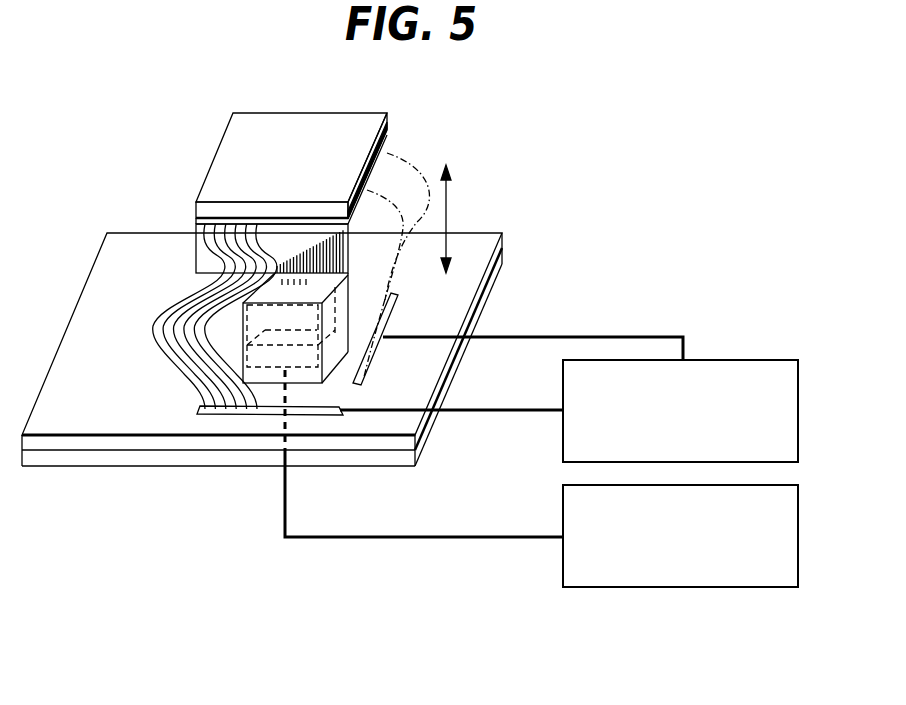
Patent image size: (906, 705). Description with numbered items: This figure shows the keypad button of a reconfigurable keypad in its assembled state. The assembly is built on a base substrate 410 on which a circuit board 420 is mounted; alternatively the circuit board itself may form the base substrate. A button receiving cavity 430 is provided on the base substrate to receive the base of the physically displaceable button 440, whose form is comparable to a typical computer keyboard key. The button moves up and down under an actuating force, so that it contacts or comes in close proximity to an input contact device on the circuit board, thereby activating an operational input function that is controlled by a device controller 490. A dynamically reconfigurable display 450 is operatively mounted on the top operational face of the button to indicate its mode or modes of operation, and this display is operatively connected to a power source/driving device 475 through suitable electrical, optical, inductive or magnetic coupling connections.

The base substrate 410 is at (460, 241).
The circuit board 420 is at (108, 457).
The button receiving cavity 430 is at (243, 335).
The physically displaceable button 440 is at (198, 253).
The dynamically reconfigurable display 450 is at (277, 122).
The power source/driving device 475 is at (720, 358).
The device controller 490 is at (720, 587).